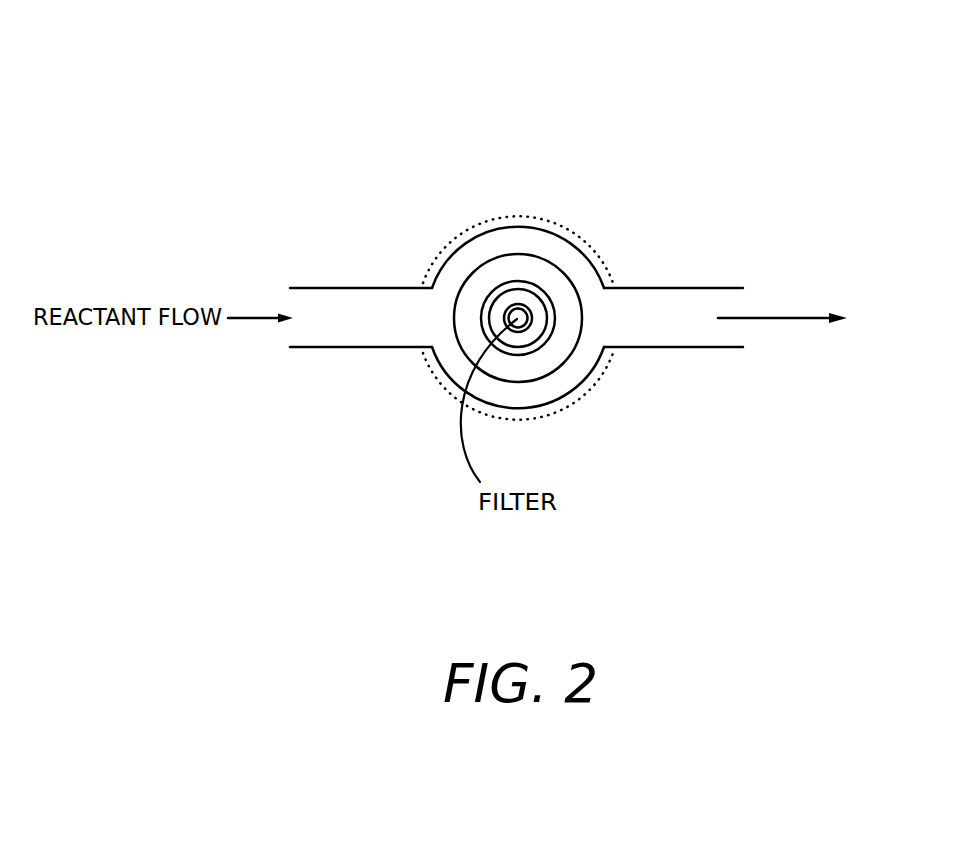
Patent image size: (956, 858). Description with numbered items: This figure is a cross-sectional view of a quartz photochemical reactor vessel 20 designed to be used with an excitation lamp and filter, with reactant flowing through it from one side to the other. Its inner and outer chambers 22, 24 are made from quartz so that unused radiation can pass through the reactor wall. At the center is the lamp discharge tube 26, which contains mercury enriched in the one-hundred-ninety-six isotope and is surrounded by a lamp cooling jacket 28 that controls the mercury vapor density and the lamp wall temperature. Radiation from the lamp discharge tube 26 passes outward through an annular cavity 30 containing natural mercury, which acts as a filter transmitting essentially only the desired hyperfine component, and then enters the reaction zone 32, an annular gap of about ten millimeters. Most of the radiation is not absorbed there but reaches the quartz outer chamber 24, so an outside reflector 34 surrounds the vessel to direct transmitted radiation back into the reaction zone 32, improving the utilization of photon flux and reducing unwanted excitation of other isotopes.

The reactor vessel 20 is at (537, 145).
The inner chamber 22 is at (579, 396).
The outer chamber 24 is at (533, 382).
The lamp discharge tube 26 is at (520, 304).
The lamp cooling jacket 28 is at (524, 313).
The annular cavity 30 is at (507, 283).
The reaction zone 32 is at (581, 360).
The outside reflector 34 is at (428, 368).